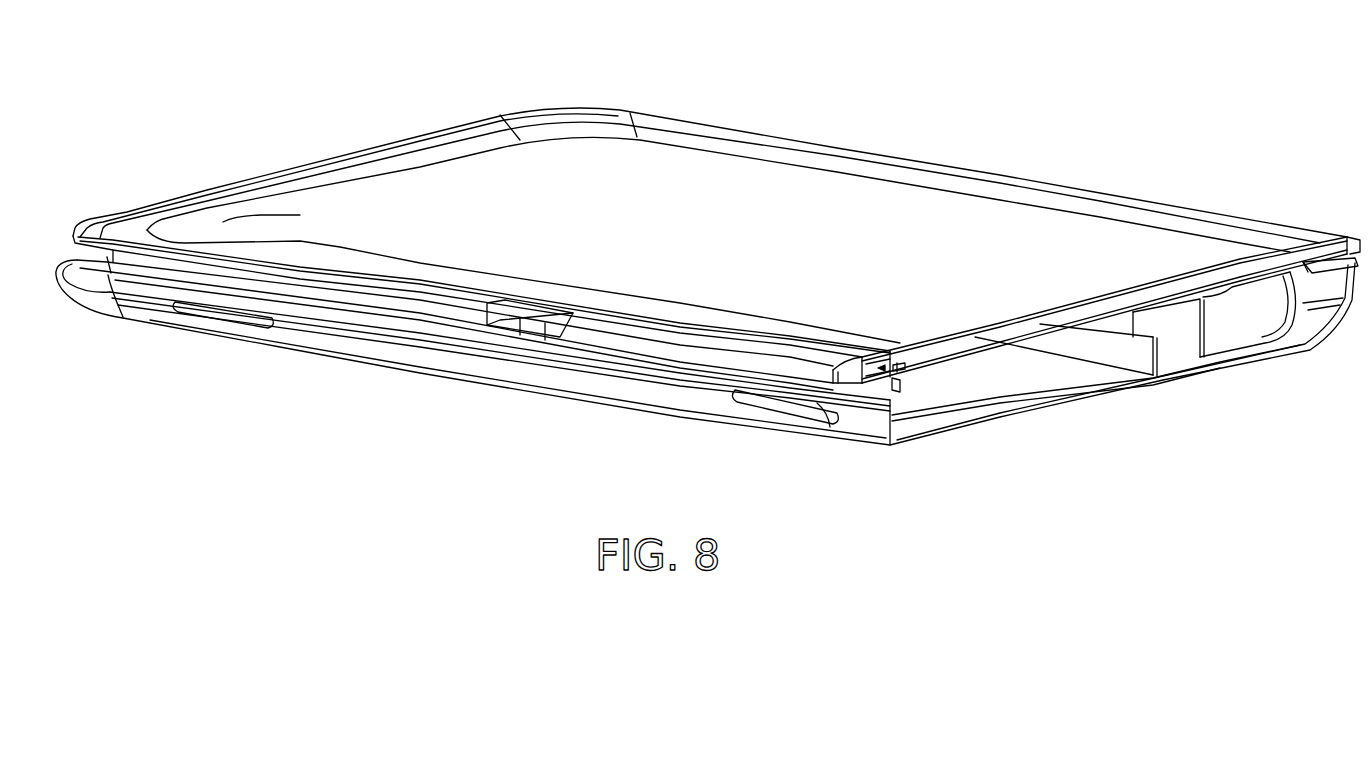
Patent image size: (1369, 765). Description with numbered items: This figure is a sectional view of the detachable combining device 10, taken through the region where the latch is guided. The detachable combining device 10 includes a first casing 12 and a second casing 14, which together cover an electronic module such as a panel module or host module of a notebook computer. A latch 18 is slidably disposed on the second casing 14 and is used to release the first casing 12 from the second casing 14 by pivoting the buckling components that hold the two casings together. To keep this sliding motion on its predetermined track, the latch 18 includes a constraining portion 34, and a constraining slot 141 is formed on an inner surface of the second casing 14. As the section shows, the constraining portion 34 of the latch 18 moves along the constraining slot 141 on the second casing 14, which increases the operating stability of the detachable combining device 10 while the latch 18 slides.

The detachable combining device 10 is at (1130, 107).
The first casing 12 is at (996, 332).
The second casing 14 is at (985, 350).
The latch 18 is at (895, 360).
The constraining portion 34 is at (900, 369).
The constraining slot 141 is at (898, 380).